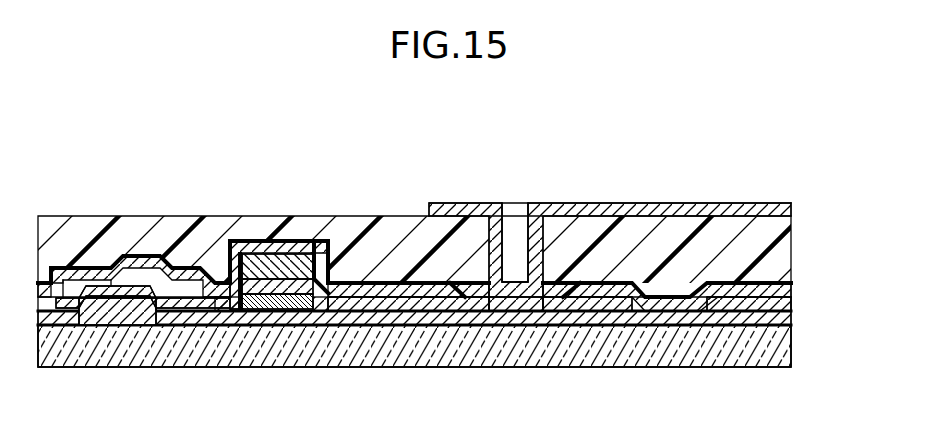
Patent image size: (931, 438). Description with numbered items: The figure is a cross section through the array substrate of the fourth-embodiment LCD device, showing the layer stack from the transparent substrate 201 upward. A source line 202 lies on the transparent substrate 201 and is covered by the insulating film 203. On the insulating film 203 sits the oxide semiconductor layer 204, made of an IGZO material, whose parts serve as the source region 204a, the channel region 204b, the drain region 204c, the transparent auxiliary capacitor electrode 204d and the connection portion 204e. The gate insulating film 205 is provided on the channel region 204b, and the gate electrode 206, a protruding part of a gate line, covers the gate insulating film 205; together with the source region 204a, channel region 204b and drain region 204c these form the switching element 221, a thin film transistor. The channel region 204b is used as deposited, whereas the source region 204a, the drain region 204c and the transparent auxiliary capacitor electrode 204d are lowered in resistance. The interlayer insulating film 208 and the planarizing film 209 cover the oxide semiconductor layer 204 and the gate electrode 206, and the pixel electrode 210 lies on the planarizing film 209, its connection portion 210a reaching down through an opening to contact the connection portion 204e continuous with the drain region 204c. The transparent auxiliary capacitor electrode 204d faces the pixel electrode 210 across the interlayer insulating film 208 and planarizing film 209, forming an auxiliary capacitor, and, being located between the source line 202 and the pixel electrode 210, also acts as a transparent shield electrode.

The transparent substrate 201 is at (792, 353).
The source line 202 is at (110, 317).
The insulating film 203 is at (792, 322).
The oxide semiconductor layer 204 is at (585, 313).
The source region 204a is at (203, 300).
The channel region 204b is at (279, 300).
The drain region 204c is at (412, 300).
The transparent auxiliary capacitor electrode 204d is at (752, 300).
The connection portion 204e is at (520, 300).
The gate insulating film 205 is at (258, 290).
The gate electrode 206 is at (300, 262).
The interlayer insulating film 208 is at (792, 290).
The planarizing film 209 is at (792, 248).
The pixel electrode 210 is at (700, 203).
The connection portion of the pixel electrode 210a is at (528, 215).
The switching element 221 is at (220, 265).